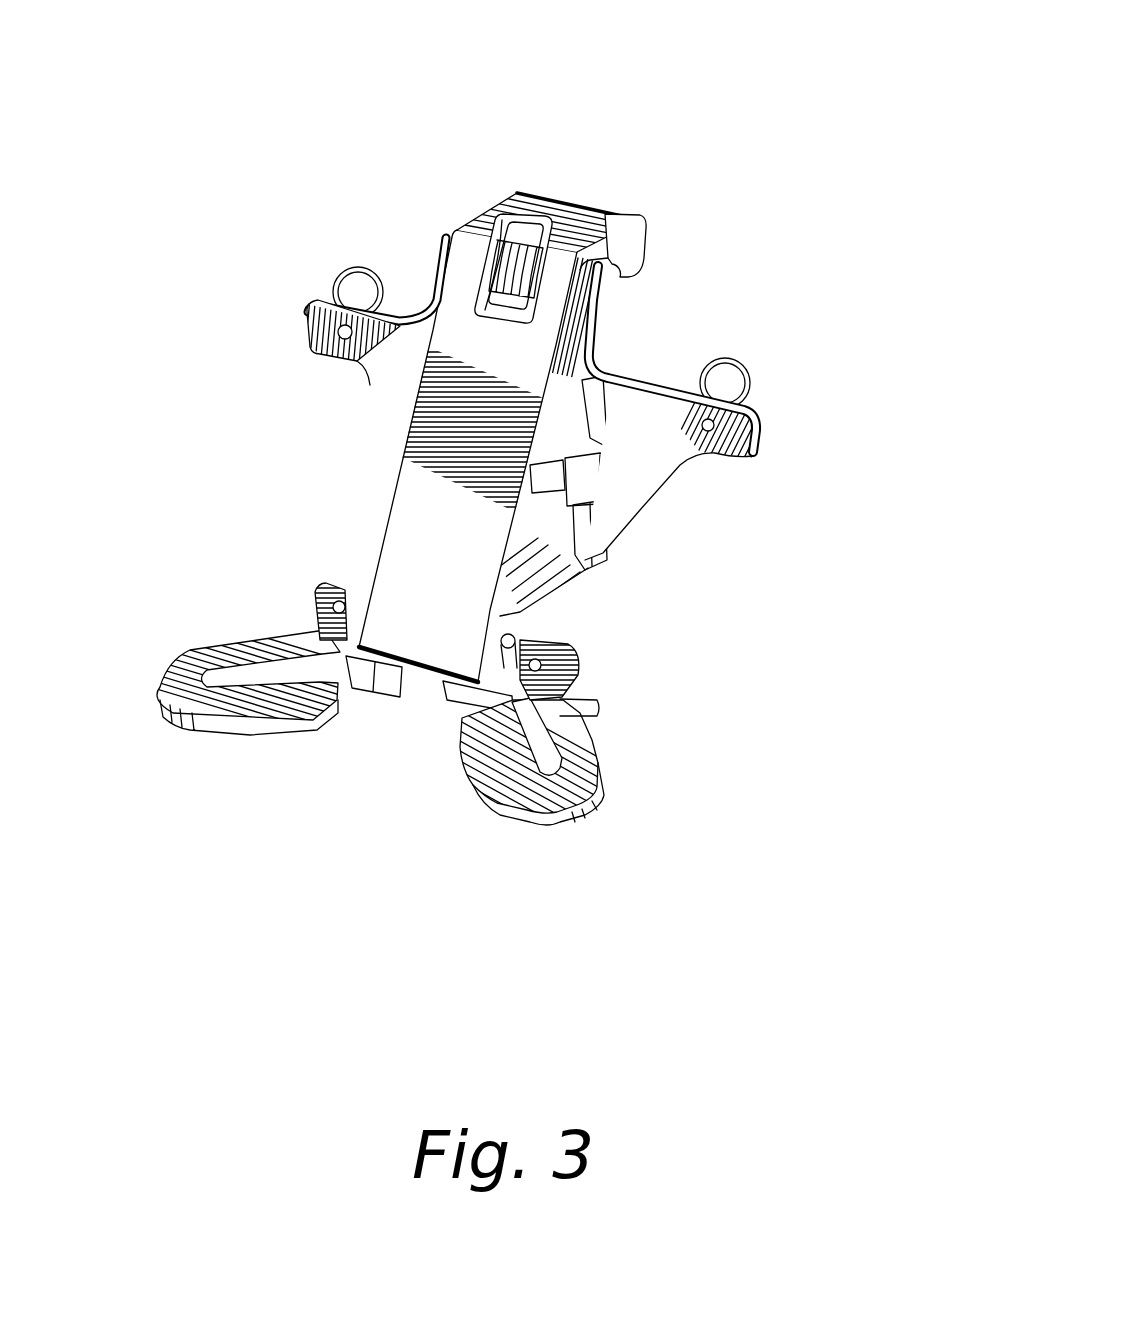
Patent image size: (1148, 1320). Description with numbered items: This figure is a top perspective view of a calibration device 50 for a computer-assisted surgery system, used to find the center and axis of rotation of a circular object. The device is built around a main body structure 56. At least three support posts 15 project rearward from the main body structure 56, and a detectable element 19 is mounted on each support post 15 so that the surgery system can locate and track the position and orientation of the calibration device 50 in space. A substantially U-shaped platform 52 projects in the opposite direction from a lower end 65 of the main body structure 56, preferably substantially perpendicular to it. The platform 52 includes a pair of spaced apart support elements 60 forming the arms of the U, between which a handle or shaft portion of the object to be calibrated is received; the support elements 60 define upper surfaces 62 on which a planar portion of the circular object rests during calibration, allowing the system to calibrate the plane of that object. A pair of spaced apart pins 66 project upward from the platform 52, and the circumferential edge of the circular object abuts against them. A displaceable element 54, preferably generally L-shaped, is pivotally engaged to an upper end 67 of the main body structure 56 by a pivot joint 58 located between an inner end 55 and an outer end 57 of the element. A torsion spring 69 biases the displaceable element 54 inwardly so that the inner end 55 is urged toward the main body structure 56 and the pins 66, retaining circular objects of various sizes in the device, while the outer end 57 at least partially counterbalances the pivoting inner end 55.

The calibration device 50 is at (807, 202).
The displaceable element 54 is at (440, 518).
The inner end 55 is at (425, 667).
The main body structure 56 is at (660, 482).
The outer end 57 is at (633, 248).
The pivot joint 58 is at (470, 240).
The torsion spring 69 is at (518, 217).
The upper end 67 is at (598, 339).
The detectable element 19 is at (357, 283).
The support post 15 is at (343, 330).
The support element 60 is at (441, 765).
The upper surface 62 is at (217, 657).
The pin 66 is at (300, 628).
The lower end 65 is at (520, 626).
The U-shaped platform 52 is at (600, 740).